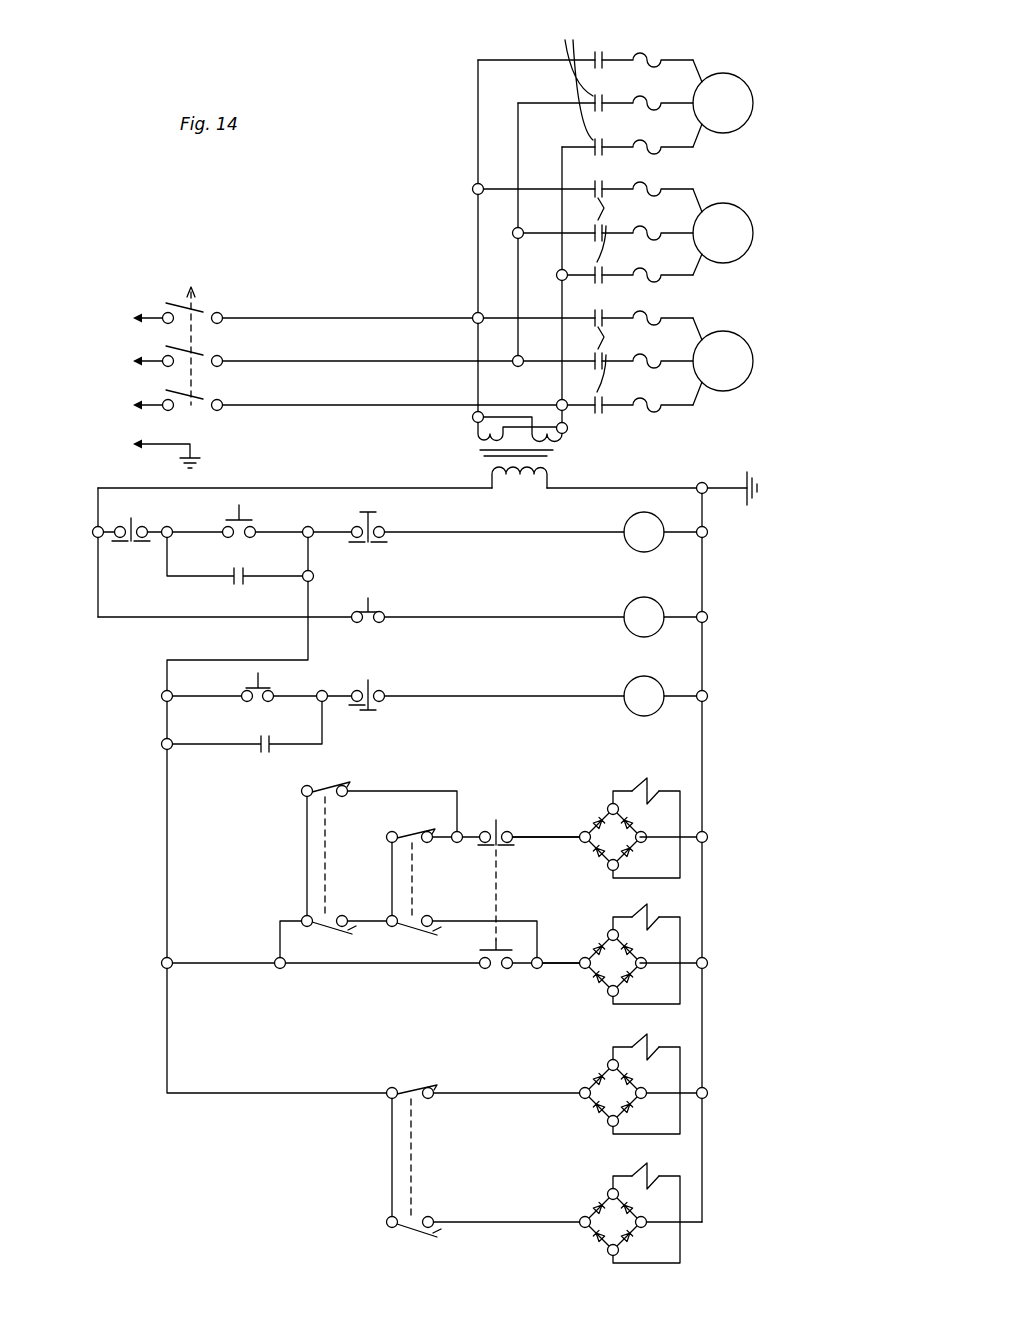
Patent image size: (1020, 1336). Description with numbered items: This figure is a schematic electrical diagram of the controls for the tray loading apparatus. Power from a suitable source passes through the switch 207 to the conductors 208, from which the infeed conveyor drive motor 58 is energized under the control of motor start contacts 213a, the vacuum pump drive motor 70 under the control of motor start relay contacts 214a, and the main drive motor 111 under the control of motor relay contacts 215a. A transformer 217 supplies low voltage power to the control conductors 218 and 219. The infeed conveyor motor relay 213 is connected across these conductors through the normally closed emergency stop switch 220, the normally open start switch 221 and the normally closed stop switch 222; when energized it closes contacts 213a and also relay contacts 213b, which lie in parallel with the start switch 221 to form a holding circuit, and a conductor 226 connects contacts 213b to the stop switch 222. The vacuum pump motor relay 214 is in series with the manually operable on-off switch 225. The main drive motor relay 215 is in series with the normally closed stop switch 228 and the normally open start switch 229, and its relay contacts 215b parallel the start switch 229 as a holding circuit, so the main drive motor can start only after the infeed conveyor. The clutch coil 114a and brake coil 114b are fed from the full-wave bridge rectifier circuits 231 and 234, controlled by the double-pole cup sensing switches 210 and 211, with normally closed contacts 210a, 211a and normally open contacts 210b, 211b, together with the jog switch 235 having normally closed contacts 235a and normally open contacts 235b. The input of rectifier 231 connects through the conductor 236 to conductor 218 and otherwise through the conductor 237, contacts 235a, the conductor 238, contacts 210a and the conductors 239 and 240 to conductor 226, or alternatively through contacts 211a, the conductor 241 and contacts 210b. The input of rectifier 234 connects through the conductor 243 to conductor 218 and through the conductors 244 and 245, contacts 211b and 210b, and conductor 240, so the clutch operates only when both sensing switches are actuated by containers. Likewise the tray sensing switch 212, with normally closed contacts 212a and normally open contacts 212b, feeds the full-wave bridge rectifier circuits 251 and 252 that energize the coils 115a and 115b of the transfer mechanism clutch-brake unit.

The infeed conveyor drive motor 58 is at (745, 104).
The vacuum pump drive motor 70 is at (745, 234).
The main drive motor 111 is at (745, 357).
The switch 207 is at (200, 312).
The conductors 208 is at (291, 404).
The motor start contacts 213a is at (586, 53).
The motor start relay contacts 214a is at (622, 232).
The motor relay contacts 215a is at (622, 361).
The transformer 217 is at (567, 444).
The conductor 218 is at (706, 513).
The conductor 219 is at (98, 505).
The emergency stop switch 220 is at (131, 550).
The start switch 221 is at (246, 518).
The stop switch 222 is at (383, 548).
The on-off switch 225 is at (381, 609).
The conductor 226 is at (310, 641).
The stop switch 228 is at (384, 688).
The start switch 229 is at (247, 683).
The infeed conveyor motor relay 213 is at (632, 525).
The vacuum pump motor relay 214 is at (632, 611).
The main drive motor relay 215 is at (632, 688).
The relay contacts 213b is at (238, 571).
The relay contacts 215b is at (263, 757).
The cup sensing switch 210 is at (325, 860).
The normally closed contacts 210a is at (326, 790).
The normally open contacts 210b is at (330, 934).
The cup sensing switch 211 is at (411, 862).
The normally closed contacts 211a is at (410, 832).
The normally open contacts 211b is at (410, 937).
The tray sensing switch 212 is at (412, 1145).
The normally closed contacts 212a is at (413, 1090).
The normally open contacts 212b is at (408, 1238).
The conductor 238 is at (457, 790).
The conductor 239 is at (305, 837).
The conductor 240 is at (232, 964).
The conductor 241 is at (390, 891).
The conductor 244 is at (559, 972).
The conductor 245 is at (452, 920).
The conductor 237 is at (532, 835).
The conductor 236 is at (695, 836).
The conductor 243 is at (670, 963).
The jog switch 235 is at (494, 905).
The normally closed jog switch contacts 235a is at (500, 845).
The normally open contacts 235b is at (500, 970).
The full-wave bridge rectifier circuit 231 is at (597, 820).
The full-wave bridge rectifier circuit 234 is at (598, 950).
The full-wave bridge rectifier circuit 251 is at (597, 1076).
The full-wave bridge rectifier circuit 252 is at (597, 1205).
The clutch coil 114a is at (645, 786).
The brake coil 114b is at (645, 914).
The clutch coil 115a is at (645, 1046).
The brake coil 115b is at (645, 1175).